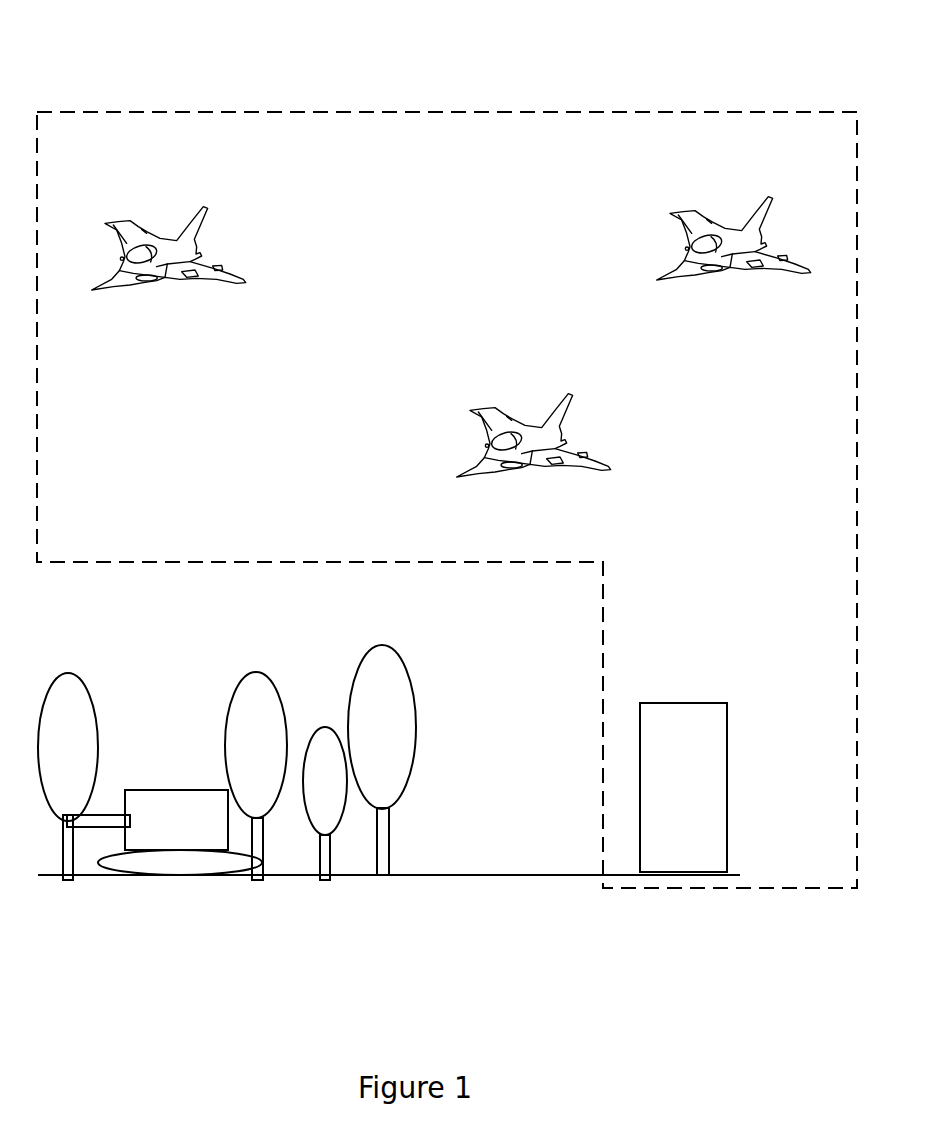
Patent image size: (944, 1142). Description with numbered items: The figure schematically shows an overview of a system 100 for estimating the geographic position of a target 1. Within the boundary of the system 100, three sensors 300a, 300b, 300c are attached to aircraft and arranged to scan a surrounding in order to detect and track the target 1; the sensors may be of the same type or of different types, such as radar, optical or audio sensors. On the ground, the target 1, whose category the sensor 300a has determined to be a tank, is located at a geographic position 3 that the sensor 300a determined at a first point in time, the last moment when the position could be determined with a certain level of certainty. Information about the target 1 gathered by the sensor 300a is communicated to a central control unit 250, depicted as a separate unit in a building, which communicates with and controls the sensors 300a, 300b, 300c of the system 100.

The system 100 is at (273, 68).
The sensor 300a is at (160, 208).
The sensor 300b is at (522, 395).
The sensor 300c is at (724, 200).
The target 1 is at (176, 820).
The geographic position 3 is at (179, 892).
The central control unit 250 is at (683, 787).